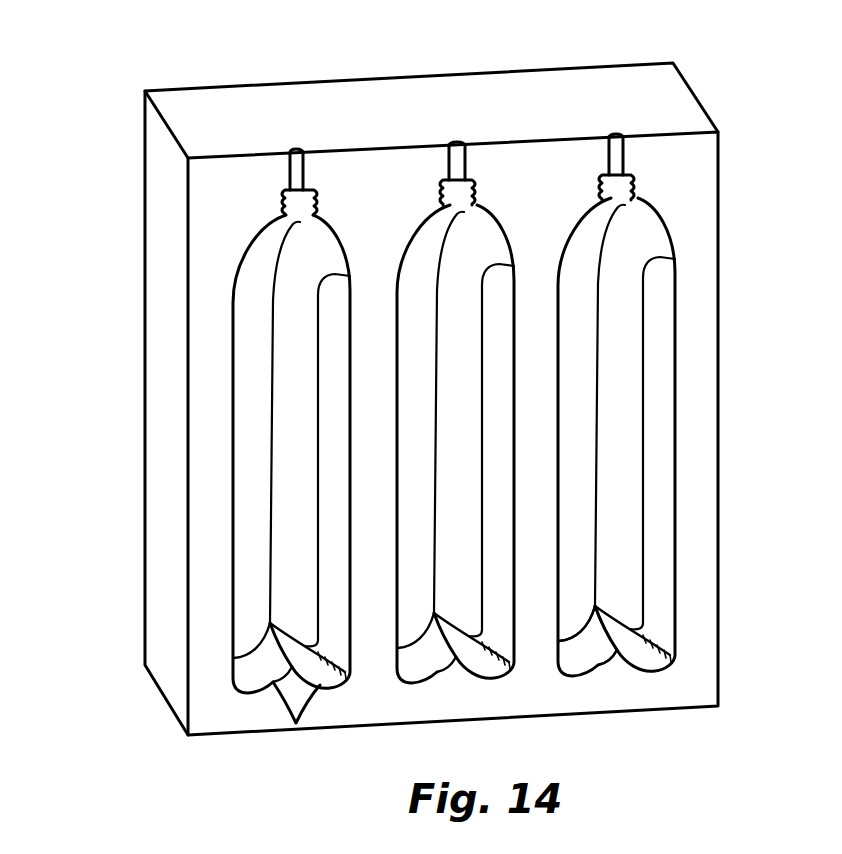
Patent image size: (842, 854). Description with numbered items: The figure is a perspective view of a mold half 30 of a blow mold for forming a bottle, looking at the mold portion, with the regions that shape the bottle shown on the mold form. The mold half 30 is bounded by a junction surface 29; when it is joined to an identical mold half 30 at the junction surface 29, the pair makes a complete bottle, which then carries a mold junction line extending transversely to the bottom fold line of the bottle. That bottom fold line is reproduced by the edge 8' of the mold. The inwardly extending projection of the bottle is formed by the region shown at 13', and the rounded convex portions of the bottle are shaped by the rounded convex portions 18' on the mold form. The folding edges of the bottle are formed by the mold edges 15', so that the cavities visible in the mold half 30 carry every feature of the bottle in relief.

The mold half 30 is at (684, 169).
The junction surface 29 is at (205, 379).
The mold edges 15' is at (438, 413).
The edge of the mold 8' is at (455, 454).
The rounded convex portions on the mold form 18' is at (274, 465).
The inwardly extending projection on the mold form 13' is at (623, 684).